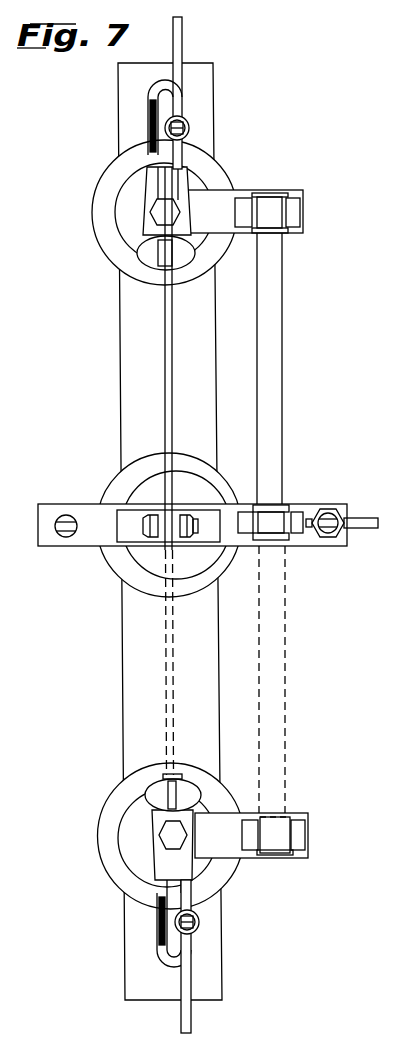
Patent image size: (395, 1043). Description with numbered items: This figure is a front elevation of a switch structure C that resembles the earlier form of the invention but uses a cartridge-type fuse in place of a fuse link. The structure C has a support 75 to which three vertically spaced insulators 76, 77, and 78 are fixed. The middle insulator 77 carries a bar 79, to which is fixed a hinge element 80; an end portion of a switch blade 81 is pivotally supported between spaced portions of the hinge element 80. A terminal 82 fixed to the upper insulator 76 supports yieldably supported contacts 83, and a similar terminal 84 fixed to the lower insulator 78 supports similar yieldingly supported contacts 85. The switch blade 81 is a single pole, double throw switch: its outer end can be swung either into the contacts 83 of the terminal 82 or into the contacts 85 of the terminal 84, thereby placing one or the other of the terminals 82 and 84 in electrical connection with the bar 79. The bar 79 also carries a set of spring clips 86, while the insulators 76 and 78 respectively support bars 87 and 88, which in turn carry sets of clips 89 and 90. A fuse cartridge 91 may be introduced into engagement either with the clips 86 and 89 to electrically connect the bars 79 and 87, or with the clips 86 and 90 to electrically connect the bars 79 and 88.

The structure C is at (203, 123).
The support 75 is at (127, 354).
The insulator 76 is at (189, 285).
The insulator 77 is at (190, 592).
The insulator 78 is at (230, 880).
The bar 79 is at (73, 510).
The hinge element 80 is at (210, 520).
The switch blade 81 is at (173, 411).
The terminal 82 is at (180, 183).
The contacts 83 is at (152, 258).
The terminal 84 is at (162, 866).
The contacts 85 is at (163, 793).
The spring clips 86 is at (298, 530).
The bar 87 is at (296, 193).
The bar 88 is at (300, 813).
The clips 89 is at (246, 203).
The clips 90 is at (248, 845).
The fuse cartridge 91 is at (276, 367).